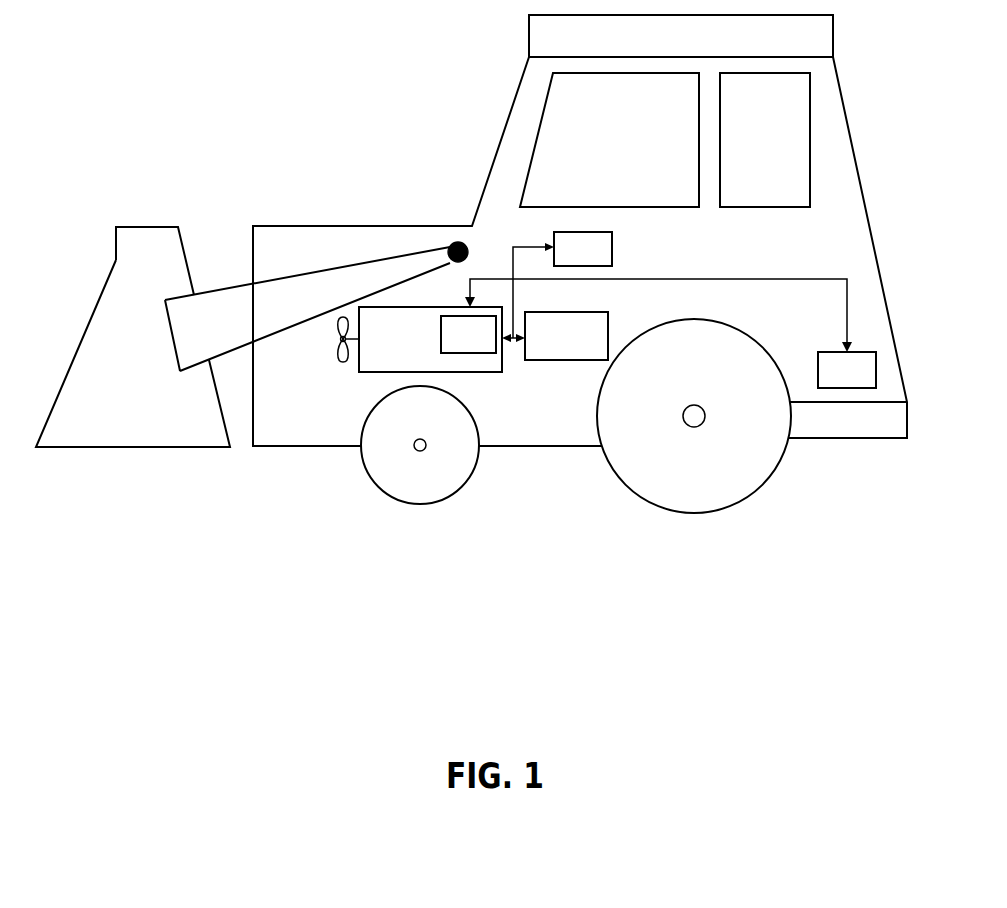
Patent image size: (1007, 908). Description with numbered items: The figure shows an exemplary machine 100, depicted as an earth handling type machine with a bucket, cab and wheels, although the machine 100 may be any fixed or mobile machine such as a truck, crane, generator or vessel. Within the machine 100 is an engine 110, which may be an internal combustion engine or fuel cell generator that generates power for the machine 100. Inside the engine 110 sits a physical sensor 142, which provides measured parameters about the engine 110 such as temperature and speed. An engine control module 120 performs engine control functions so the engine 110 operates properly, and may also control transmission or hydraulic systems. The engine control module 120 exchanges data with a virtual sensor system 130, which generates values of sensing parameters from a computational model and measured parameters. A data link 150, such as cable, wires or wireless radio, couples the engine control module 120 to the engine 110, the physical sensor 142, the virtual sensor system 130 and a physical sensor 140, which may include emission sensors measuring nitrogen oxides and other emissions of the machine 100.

The machine 100 is at (815, 100).
The engine 110 is at (420, 345).
The physical sensor 142 is at (488, 345).
The engine control module 120 is at (587, 346).
The virtual sensor system 130 is at (603, 261).
The physical sensor 140 is at (867, 381).
The data link 150 is at (678, 279).